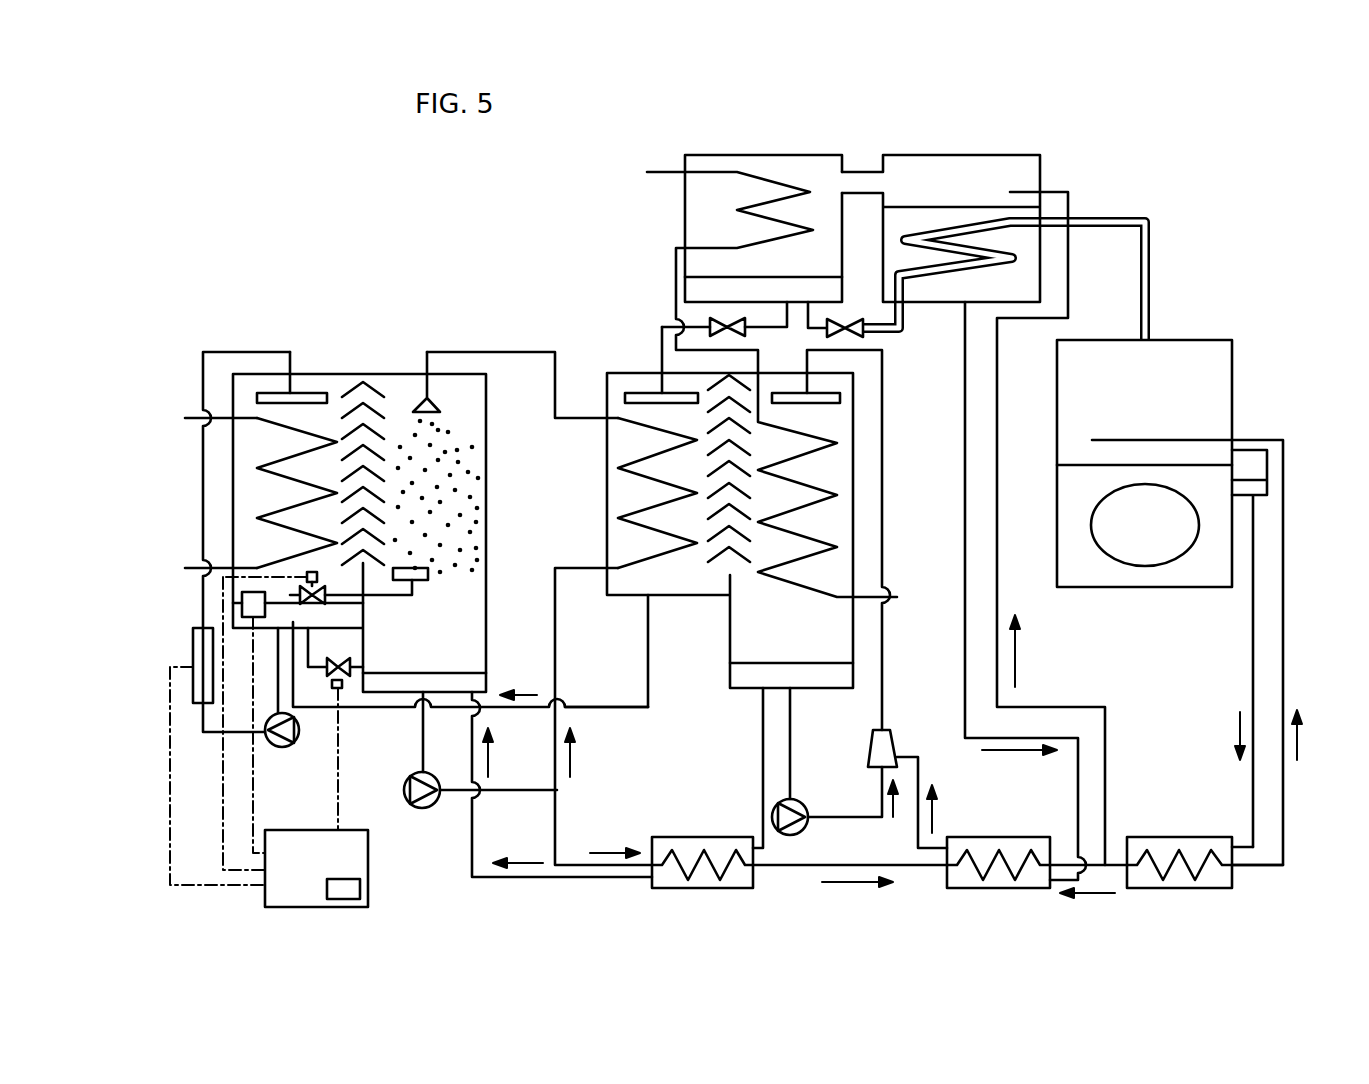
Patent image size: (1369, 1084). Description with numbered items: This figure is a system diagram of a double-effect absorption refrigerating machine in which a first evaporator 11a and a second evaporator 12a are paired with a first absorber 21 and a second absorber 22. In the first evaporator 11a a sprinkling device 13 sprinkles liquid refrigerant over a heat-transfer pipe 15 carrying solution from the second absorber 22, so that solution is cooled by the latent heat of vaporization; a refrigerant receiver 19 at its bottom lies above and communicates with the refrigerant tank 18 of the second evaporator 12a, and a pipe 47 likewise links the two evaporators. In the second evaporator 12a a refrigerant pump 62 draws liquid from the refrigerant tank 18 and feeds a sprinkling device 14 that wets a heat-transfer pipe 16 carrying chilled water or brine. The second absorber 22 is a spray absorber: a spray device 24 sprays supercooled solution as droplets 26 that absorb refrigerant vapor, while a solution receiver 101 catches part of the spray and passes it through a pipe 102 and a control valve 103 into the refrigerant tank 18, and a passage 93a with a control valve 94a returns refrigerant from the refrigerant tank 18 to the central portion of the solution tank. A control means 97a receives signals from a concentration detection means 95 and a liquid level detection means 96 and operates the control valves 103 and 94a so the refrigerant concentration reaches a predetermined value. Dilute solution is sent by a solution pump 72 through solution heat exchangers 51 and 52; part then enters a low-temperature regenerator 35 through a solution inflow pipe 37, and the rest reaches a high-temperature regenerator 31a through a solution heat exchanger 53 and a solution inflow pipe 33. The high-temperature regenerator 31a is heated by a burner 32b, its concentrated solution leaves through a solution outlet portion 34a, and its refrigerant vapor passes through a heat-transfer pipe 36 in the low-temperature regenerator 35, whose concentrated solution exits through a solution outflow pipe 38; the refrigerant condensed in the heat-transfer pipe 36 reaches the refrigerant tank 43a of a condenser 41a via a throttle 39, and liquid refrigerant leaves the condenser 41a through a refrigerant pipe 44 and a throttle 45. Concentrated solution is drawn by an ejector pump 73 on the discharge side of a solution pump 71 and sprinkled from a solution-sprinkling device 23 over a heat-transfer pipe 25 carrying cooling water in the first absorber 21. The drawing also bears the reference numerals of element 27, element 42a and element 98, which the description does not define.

The first evaporator 11a is at (622, 385).
The second evaporator 12a is at (240, 375).
The sprinkling device 13 is at (656, 393).
The sprinkling device 14 is at (272, 393).
The heat-transfer pipe 15 is at (642, 500).
The heat-transfer pipe 16 is at (272, 500).
The refrigerant tank 18 is at (276, 700).
The refrigerant receiver 19 is at (684, 598).
The first absorber 21 is at (840, 380).
The second absorber 22 is at (395, 385).
The solution-sprinkling device 23 is at (845, 400).
The spray device 24 is at (435, 400).
The heat-transfer pipe 25 is at (815, 480).
The droplets 26 is at (440, 470).
The liquid reservoir 27 is at (745, 690).
The high-temperature regenerator 31a is at (1193, 355).
The burner 32b is at (1130, 567).
The solution inflow pipe 33 is at (1255, 438).
The solution outlet portion 34a is at (1268, 470).
The low-temperature regenerator 35 is at (1028, 162).
The heat-transfer pipe 36 is at (985, 240).
The solution inflow pipe 37 is at (1072, 196).
The solution outflow pipe 38 is at (972, 655).
The throttle 39 is at (848, 323).
The condenser 41a is at (822, 160).
The heat exchanger coil 42a is at (765, 190).
The refrigerant tank 43a is at (790, 297).
The refrigerant pipe 44 is at (763, 326).
The throttle 45 is at (718, 322).
The pipe 47 is at (612, 709).
The solution heat exchanger 51 is at (700, 888).
The solution heat exchanger 52 is at (1005, 888).
The solution heat exchanger 53 is at (1208, 888).
The refrigerant pump 62 is at (282, 748).
The solution pump 71 is at (803, 800).
The solution pump 72 is at (422, 810).
The ejector pump 73 is at (895, 740).
The passage 93a is at (322, 672).
The control valve 94a is at (343, 690).
The concentration detection means 95 is at (193, 660).
The liquid level detection means 96 is at (242, 603).
The control means 97a is at (292, 908).
The memory 98 is at (347, 900).
The solution receiver 101 is at (430, 577).
The pipe 102 is at (412, 603).
The control valve 103 is at (305, 572).